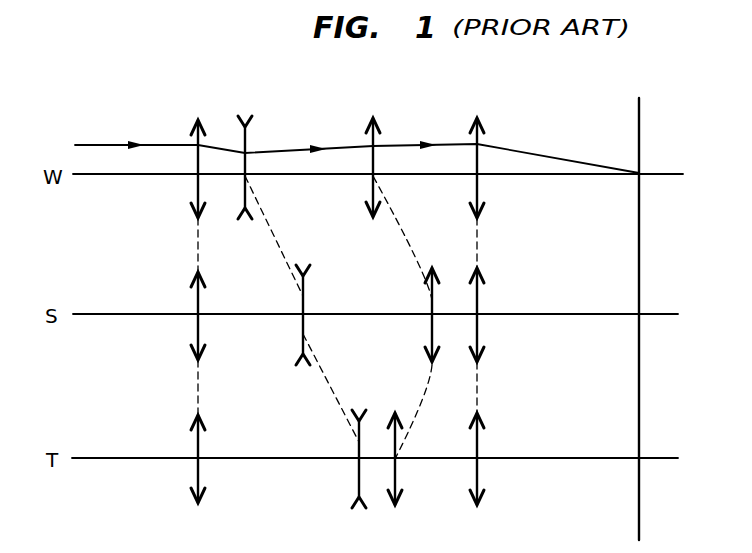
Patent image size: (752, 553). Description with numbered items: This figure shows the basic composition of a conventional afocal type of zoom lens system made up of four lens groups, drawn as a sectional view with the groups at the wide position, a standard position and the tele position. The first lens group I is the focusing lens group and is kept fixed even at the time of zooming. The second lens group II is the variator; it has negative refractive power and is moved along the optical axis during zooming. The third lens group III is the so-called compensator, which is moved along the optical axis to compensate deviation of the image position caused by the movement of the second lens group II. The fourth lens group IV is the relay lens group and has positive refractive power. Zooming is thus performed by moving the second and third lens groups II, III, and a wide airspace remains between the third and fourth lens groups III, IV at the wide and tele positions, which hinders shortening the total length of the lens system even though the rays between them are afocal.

The first lens group I is at (202, 107).
The second lens group II is at (253, 107).
The third lens group III is at (383, 107).
The fourth lens group IV is at (489, 91).